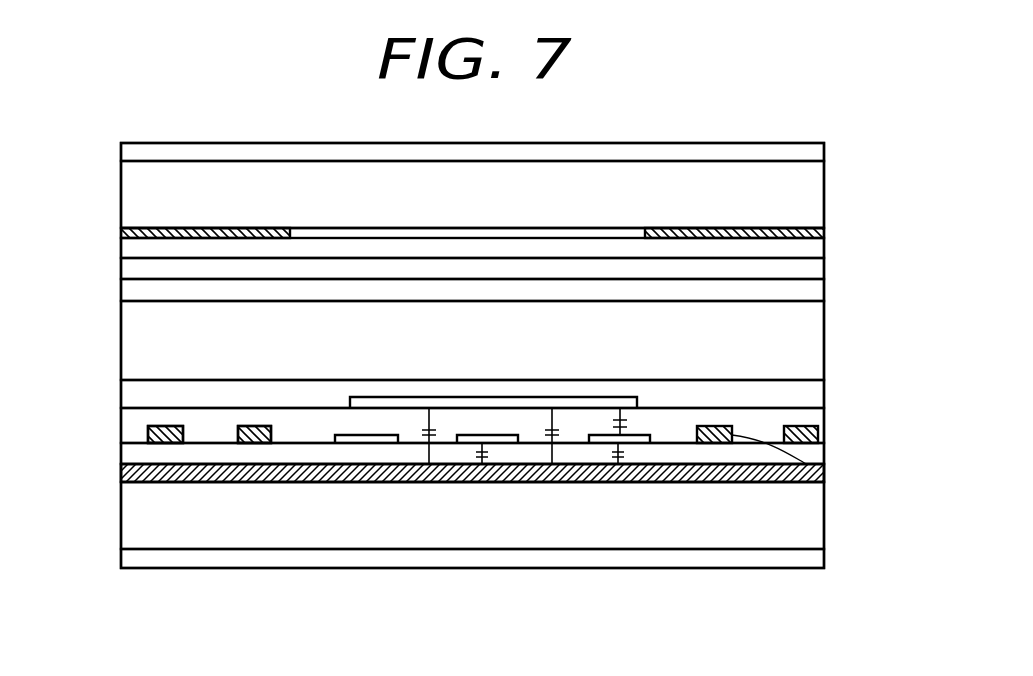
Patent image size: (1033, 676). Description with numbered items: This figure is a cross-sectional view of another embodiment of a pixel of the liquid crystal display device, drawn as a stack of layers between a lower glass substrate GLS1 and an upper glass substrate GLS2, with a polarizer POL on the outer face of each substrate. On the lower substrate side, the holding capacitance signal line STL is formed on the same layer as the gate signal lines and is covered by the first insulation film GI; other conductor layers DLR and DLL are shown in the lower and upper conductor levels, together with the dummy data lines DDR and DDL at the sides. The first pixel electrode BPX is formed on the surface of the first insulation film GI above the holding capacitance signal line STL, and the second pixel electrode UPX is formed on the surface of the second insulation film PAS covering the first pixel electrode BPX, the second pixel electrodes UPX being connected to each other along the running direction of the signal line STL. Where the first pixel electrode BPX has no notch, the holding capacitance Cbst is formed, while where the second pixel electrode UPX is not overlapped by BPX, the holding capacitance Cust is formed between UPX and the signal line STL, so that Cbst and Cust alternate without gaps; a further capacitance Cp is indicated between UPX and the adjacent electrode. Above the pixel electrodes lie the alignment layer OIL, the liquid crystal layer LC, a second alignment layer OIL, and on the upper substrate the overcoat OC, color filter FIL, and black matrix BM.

The polarizer POL is at (818, 152).
The upper glass substrate GLS2 is at (815, 187).
The black matrix BM is at (818, 233).
The color filter FIL is at (815, 247).
The overcoat layer OC is at (817, 270).
The alignment layer OIL is at (802, 292).
The liquid crystal layer LC is at (803, 349).
The passivation layer PAS is at (820, 420).
The second pixel electrode UPX is at (483, 400).
The data line layer DLL is at (818, 433).
The first insulation film GI is at (820, 452).
The lower data/gate line layer DLR is at (824, 477).
The lower glass substrate GLS1 is at (812, 513).
The first pixel electrode BPX is at (589, 443).
The holding capacitance Cust is at (514, 436).
The parasitic capacitor Cp is at (632, 423).
The holding capacitance Cbst is at (488, 455).
The right dummy data line DDR is at (160, 443).
The left dummy data line DDL is at (238, 443).
The holding capacitance signal line STL is at (121, 474).